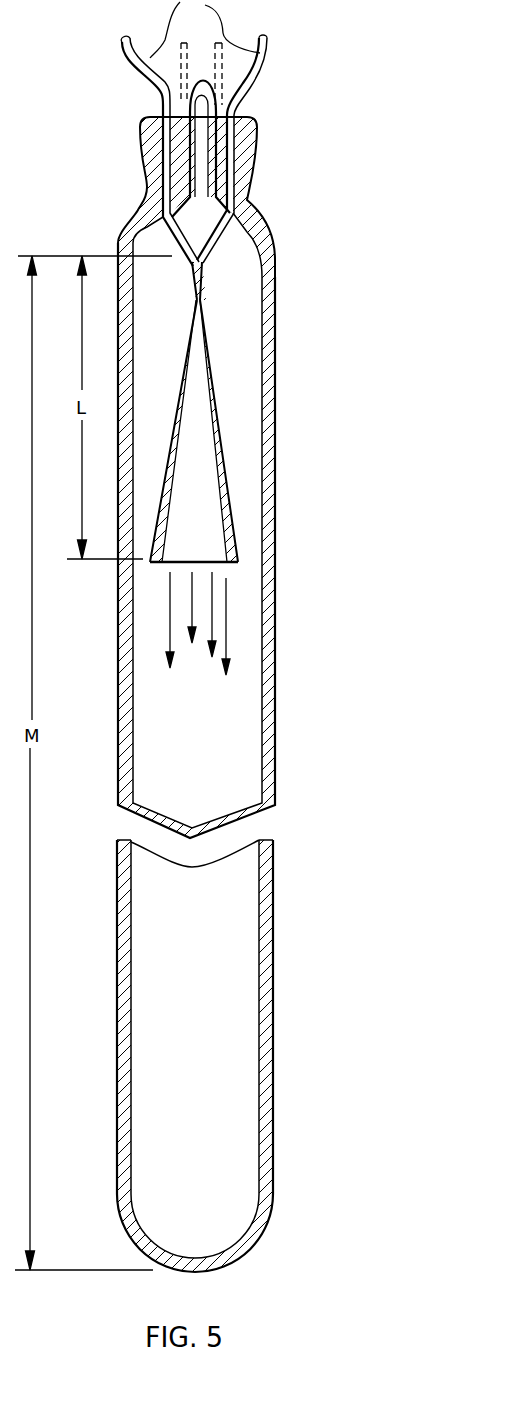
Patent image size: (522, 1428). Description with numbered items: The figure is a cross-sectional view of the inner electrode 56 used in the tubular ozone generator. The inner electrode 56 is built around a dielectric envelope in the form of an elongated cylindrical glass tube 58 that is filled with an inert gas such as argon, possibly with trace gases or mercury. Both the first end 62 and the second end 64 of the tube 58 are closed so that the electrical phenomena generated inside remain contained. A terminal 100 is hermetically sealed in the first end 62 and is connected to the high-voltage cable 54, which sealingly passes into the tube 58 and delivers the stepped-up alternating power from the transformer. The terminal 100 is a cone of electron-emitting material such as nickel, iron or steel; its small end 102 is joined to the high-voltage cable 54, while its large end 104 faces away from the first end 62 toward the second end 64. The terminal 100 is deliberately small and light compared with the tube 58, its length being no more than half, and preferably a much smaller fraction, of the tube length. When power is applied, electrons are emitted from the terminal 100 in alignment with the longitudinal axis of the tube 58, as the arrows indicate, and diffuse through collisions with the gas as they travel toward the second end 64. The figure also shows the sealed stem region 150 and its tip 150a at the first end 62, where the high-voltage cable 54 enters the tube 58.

The high-voltage cable 54 is at (205, 29).
The inner electrode 56 is at (305, 718).
The glass tube 58 is at (275, 603).
The first end 62 is at (275, 350).
The second end 64 is at (266, 1135).
The terminal 100 is at (205, 459).
The small end 102 is at (205, 282).
The large end 104 is at (193, 556).
The stem press seal 150 is at (223, 63).
The exhaust tube tip 150a is at (216, 93).